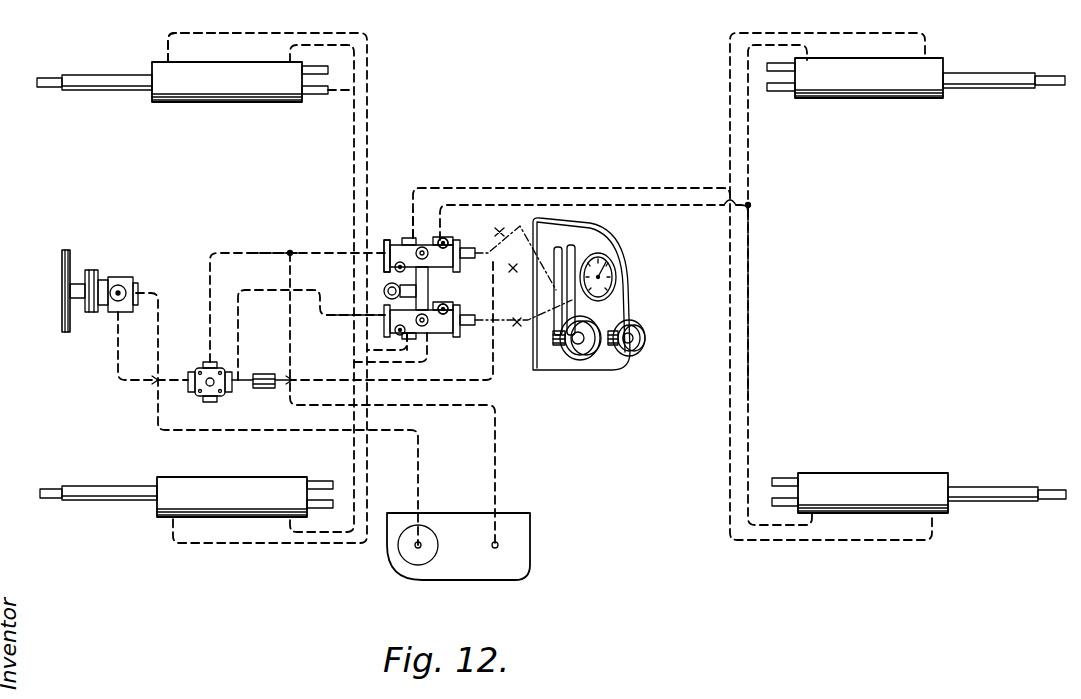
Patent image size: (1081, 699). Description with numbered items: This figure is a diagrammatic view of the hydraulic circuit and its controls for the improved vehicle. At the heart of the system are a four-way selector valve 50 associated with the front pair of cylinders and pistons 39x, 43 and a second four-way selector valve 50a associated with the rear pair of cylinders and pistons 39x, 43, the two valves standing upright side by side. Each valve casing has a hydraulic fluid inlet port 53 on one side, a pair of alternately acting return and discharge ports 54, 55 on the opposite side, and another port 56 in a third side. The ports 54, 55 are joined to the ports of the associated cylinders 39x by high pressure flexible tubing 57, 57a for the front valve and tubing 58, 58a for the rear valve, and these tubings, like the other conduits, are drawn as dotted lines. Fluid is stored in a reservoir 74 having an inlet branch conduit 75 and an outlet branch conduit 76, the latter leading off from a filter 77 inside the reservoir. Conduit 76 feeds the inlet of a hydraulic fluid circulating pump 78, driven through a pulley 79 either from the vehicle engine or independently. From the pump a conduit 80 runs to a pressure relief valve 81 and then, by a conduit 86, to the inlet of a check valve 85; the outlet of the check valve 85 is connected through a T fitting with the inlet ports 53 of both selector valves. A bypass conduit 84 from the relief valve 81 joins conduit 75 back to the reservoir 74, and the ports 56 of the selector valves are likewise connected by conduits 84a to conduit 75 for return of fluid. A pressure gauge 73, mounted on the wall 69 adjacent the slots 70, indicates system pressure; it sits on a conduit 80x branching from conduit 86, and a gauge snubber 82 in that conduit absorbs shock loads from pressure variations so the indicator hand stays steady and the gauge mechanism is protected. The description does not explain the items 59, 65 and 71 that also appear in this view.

The cylinder 39x is at (188, 103).
The piston 43 is at (97, 90).
The four-way selector valve 50 is at (433, 260).
The second four-way selector valve 50a is at (441, 308).
The hydraulic fluid inlet port 53 is at (384, 318).
The return and discharge port 54 is at (446, 238).
The return and discharge port 55 is at (410, 226).
The port 56 is at (418, 252).
The high pressure flexible tubing 57 is at (430, 360).
The high pressure flexible tubing 57a is at (367, 155).
The high pressure flexible tubing 58 is at (556, 205).
The high pressure flexible tubing 58a is at (750, 289).
The valve operating connection 59 is at (516, 278).
The control knob 65 is at (605, 355).
The wall 69 is at (561, 370).
The slot 70 is at (552, 315).
The control knob 71 is at (640, 326).
The pressure gauge 73 is at (614, 268).
The reservoir 74 is at (522, 538).
The branch conduit 75 is at (495, 490).
The branch conduit 76 is at (158, 330).
The filter 77 is at (436, 545).
The hydraulic fluid circulating pump 78 is at (120, 278).
The pulley 79 is at (62, 316).
The conduit 80 is at (118, 357).
The conduit 80x is at (474, 380).
The pressure relief valve 81 is at (201, 394).
The gauge snubber 82 is at (262, 390).
The bypass conduit 84 is at (210, 328).
The conduit 84a is at (324, 260).
The check valve 85 is at (384, 290).
The conduit 86 is at (238, 328).